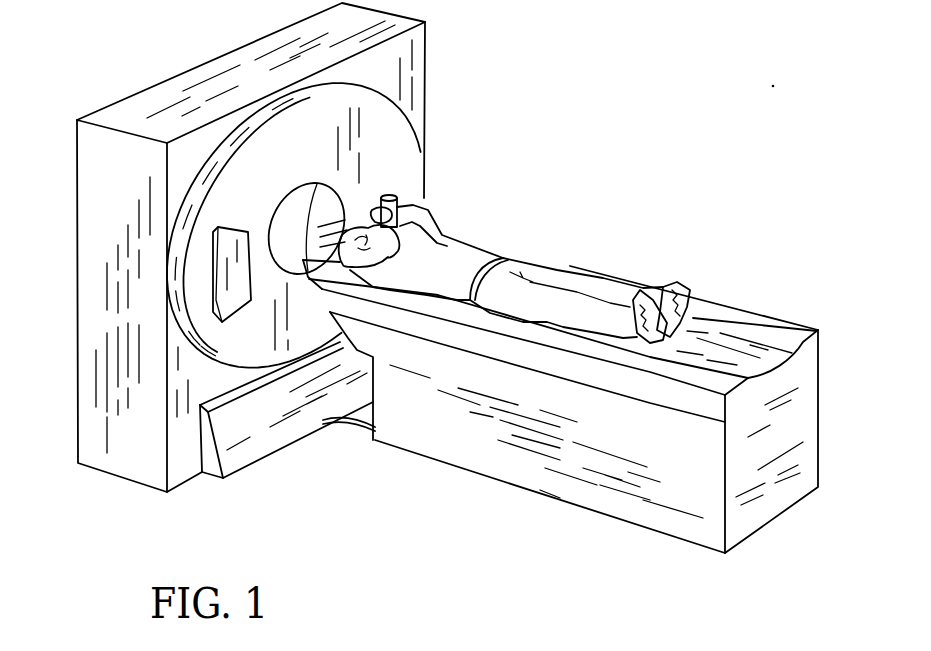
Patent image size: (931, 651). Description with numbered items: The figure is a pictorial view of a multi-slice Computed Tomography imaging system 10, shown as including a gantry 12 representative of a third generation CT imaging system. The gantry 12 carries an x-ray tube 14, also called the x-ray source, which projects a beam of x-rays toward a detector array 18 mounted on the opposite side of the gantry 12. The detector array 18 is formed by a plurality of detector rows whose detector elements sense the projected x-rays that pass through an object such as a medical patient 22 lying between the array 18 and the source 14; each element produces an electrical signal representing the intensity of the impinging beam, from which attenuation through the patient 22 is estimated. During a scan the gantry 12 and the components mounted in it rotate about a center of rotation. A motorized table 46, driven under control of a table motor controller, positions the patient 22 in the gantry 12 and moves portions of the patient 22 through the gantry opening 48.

The CT imaging system 10 is at (346, 441).
The gantry 12 is at (240, 124).
The x-ray tube 14 is at (397, 202).
The detector array 18 is at (230, 305).
The patient 22 is at (447, 240).
The motorized table 46 is at (463, 443).
The gantry opening 48 is at (292, 203).